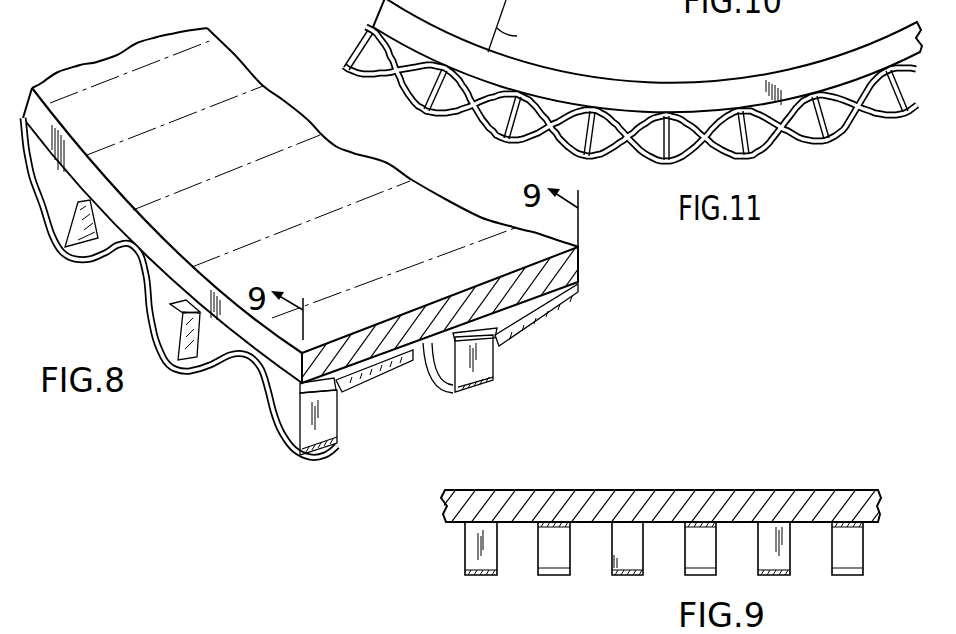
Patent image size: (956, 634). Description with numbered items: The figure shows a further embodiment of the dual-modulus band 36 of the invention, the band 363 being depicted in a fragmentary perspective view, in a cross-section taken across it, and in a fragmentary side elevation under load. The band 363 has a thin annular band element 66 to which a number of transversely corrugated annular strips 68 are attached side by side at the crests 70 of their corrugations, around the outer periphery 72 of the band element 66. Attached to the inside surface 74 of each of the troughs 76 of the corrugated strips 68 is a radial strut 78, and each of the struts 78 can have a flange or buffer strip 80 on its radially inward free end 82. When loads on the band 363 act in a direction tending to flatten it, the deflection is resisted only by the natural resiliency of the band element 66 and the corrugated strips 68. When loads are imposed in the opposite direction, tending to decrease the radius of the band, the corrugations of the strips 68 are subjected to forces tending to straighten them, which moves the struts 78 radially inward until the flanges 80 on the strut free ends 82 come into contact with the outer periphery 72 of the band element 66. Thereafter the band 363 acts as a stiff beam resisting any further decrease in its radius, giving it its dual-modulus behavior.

In FIG. 8, the dual-modulus band 36 is at (305, 179).
In FIG. 9, the dual-modulus band 36 is at (765, 469).
In FIG. 11, the dual-modulus band 36 is at (623, 40).
In FIG. 8, the band 363 is at (252, 57).
In FIG. 9, the band 363 is at (770, 482).
In FIG. 11, the band 363 is at (695, 74).
In FIG. 8, the band element 66 is at (581, 263).
In FIG. 9, the band element 66 is at (596, 489).
In FIG. 11, the band element 66 is at (665, 78).
In FIG. 8, the transversely corrugated annular strips 68 is at (277, 437).
In FIG. 9, the transversely corrugated annular strips 68 is at (465, 572).
In FIG. 11, the transversely corrugated annular strips 68 is at (603, 160).
In FIG. 8, the crests 70 is at (137, 258).
In FIG. 9, the crests 70 is at (465, 524).
In FIG. 8, the outer periphery 72 is at (115, 247).
In FIG. 9, the outer periphery 72 is at (573, 525).
In FIG. 11, the outer periphery 72 is at (369, 42).
In FIG. 8, the inside surface 74 is at (182, 373).
In FIG. 8, the troughs 76 is at (167, 342).
In FIG. 8, the radial strut 78 is at (157, 363).
In FIG. 9, the radial strut 78 is at (488, 546).
In FIG. 11, the radial strut 78 is at (448, 97).
In FIG. 8, the flange or buffer strip 80 is at (493, 353).
In FIG. 8, the radially inward free end 82 is at (437, 383).